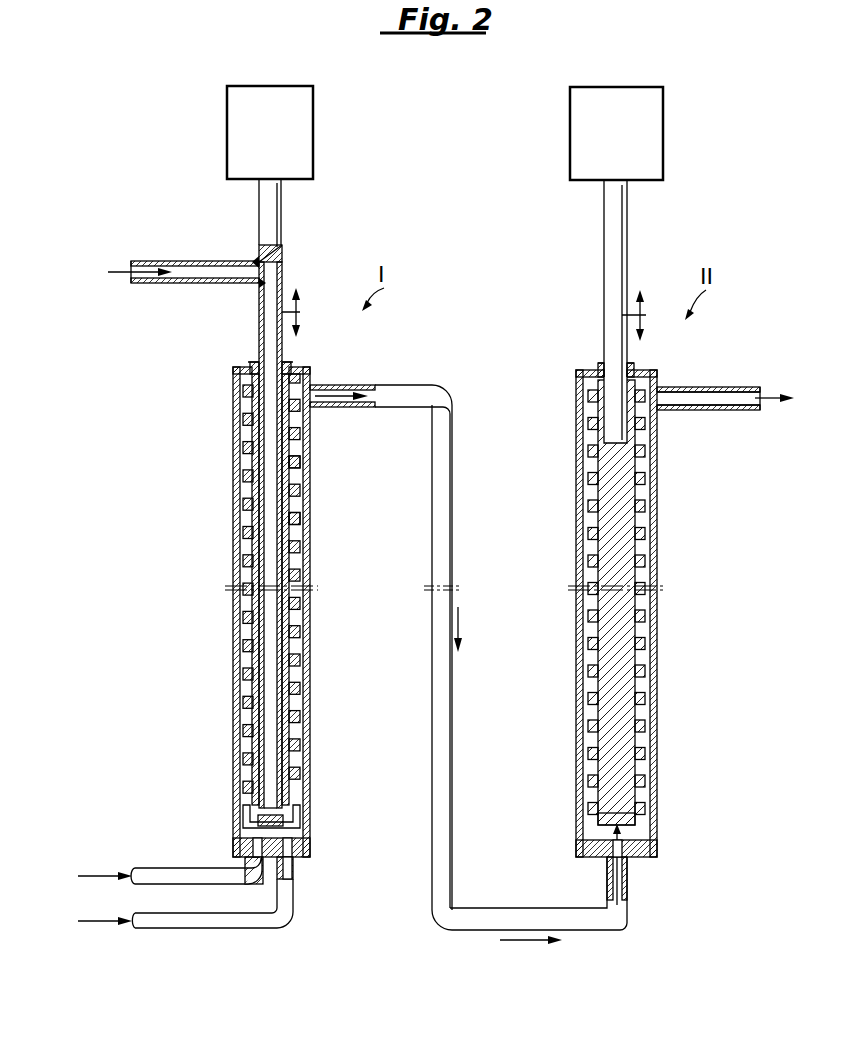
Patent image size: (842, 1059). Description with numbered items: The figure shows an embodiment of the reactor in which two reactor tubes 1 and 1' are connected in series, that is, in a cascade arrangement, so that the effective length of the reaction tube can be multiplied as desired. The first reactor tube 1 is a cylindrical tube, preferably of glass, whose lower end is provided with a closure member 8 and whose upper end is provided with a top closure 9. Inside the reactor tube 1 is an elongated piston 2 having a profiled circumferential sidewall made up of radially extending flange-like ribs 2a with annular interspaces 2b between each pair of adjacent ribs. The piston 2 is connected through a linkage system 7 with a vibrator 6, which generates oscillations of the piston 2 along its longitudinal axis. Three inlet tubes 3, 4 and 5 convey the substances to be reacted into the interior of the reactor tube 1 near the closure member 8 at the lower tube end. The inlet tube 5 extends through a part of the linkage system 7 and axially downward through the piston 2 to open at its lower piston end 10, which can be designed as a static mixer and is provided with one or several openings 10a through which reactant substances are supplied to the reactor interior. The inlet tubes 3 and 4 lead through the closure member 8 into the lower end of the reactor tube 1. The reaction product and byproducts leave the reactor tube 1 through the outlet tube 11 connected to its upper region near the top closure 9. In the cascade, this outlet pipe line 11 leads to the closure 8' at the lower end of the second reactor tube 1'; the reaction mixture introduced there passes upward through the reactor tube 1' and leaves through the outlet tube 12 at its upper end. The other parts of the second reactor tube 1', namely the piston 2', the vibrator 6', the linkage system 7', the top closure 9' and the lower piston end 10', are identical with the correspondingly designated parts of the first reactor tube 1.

The reactor tube 1 is at (288, 609).
The piston 2 is at (295, 589).
The ribs 2a is at (296, 482).
The annular interspaces 2b is at (297, 523).
The inlet tube 3 is at (176, 878).
The inlet tube 4 is at (219, 926).
The inlet tube 5 is at (205, 270).
The vibrator 6 is at (290, 132).
The linkage system 7 is at (289, 213).
The closure member 8 is at (292, 849).
The top closure 9 is at (288, 349).
The lower piston end 10 is at (309, 819).
The openings 10a is at (256, 818).
The outlet tube 11 is at (399, 385).
The outlet tube 12 is at (705, 405).
The second reactor tube 1' is at (640, 610).
The piston 2' is at (651, 602).
The vibrator 6' is at (637, 133).
The linkage system 7' is at (592, 311).
The closure 8' is at (633, 872).
The top closure 9' is at (643, 349).
The lower piston end 10' is at (659, 826).